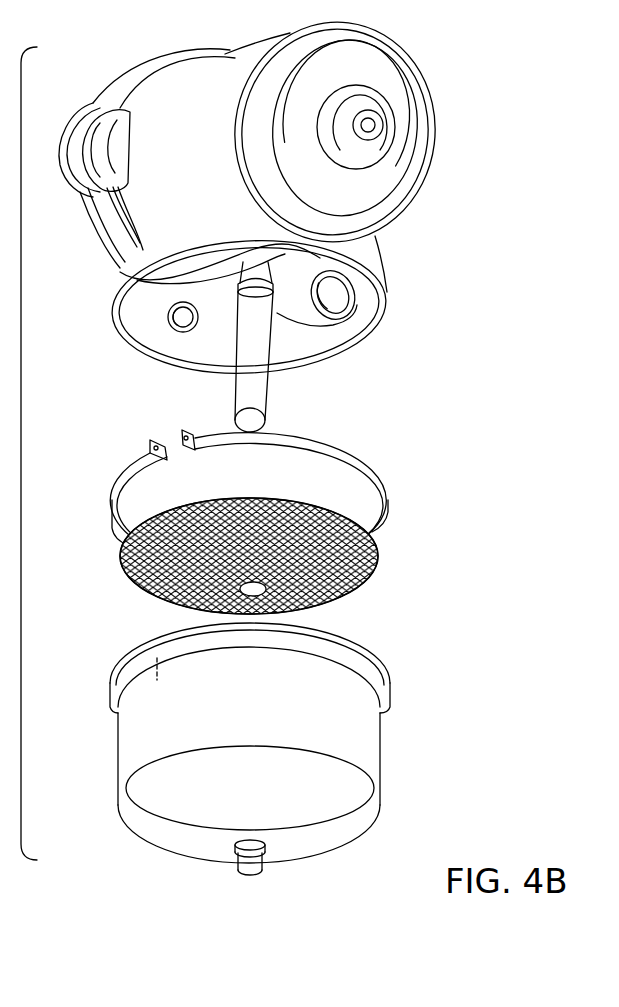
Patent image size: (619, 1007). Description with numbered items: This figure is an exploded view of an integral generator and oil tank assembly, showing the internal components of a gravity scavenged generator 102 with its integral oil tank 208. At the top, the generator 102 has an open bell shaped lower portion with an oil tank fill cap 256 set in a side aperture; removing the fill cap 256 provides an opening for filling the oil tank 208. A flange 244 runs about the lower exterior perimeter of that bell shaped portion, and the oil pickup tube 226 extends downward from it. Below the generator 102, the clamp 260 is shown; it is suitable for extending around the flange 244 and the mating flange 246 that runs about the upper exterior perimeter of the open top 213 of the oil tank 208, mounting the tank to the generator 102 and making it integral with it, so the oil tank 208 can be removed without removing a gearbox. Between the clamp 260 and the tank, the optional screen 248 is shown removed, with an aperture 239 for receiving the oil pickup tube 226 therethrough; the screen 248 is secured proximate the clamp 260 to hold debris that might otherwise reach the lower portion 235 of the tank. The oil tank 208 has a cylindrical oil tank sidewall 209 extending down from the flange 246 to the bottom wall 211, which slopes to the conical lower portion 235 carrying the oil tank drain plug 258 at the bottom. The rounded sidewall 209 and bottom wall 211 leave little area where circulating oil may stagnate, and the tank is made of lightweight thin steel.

The generator 102 is at (230, 58).
The flange 244 is at (366, 344).
The oil tank fill cap 256 is at (354, 296).
The oil pickup tube 226 is at (262, 386).
The clamp 260 is at (387, 492).
The screen 248 is at (378, 553).
The aperture 239 is at (252, 592).
The flange 246 is at (388, 682).
The open top 213 is at (157, 655).
The oil tank 208 is at (373, 743).
The oil tank sidewall 209 is at (123, 747).
The bottom wall 211 is at (175, 850).
The lower portion 235 is at (323, 835).
The oil tank drain plug 258 is at (246, 844).